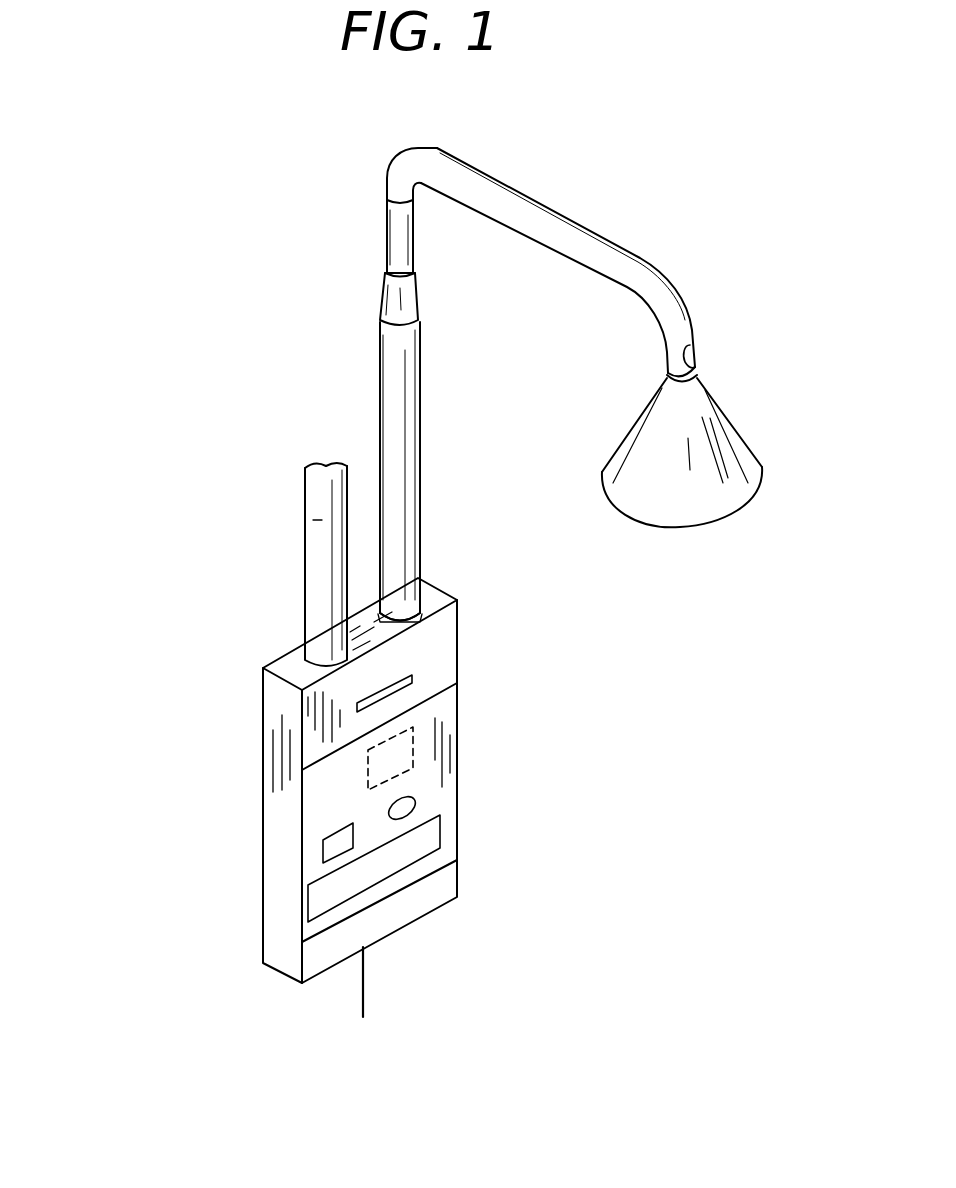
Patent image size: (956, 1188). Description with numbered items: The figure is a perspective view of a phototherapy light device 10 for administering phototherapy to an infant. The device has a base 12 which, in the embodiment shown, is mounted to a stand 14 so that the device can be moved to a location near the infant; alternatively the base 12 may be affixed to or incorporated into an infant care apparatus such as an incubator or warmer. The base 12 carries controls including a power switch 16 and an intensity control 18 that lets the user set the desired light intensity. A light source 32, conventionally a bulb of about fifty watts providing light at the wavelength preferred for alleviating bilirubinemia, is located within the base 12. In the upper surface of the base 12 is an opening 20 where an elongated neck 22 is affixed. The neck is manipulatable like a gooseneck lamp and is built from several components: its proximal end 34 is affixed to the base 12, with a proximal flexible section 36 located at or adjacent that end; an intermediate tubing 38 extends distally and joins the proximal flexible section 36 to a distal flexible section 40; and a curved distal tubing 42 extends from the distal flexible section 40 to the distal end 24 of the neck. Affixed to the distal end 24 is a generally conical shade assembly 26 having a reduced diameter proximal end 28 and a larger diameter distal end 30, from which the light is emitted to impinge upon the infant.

The phototherapy light device 10 is at (150, 550).
The base 12 is at (330, 805).
The stand 14 is at (303, 533).
The power switch 16 is at (323, 846).
The intensity control 18 is at (408, 811).
The opening 20 is at (415, 625).
The elongated neck 22 is at (330, 200).
The distal end 24 is at (683, 352).
The shade assembly 26 is at (750, 447).
The reduced diameter proximal end 28 is at (697, 372).
The larger diameter distal end 30 is at (740, 510).
The light source 32 is at (415, 742).
The proximal end 34 is at (393, 603).
The proximal flexible section 36 is at (422, 427).
The intermediate tubing 38 is at (412, 233).
The distal flexible section 40 is at (390, 172).
The curved distal tubing 42 is at (550, 207).